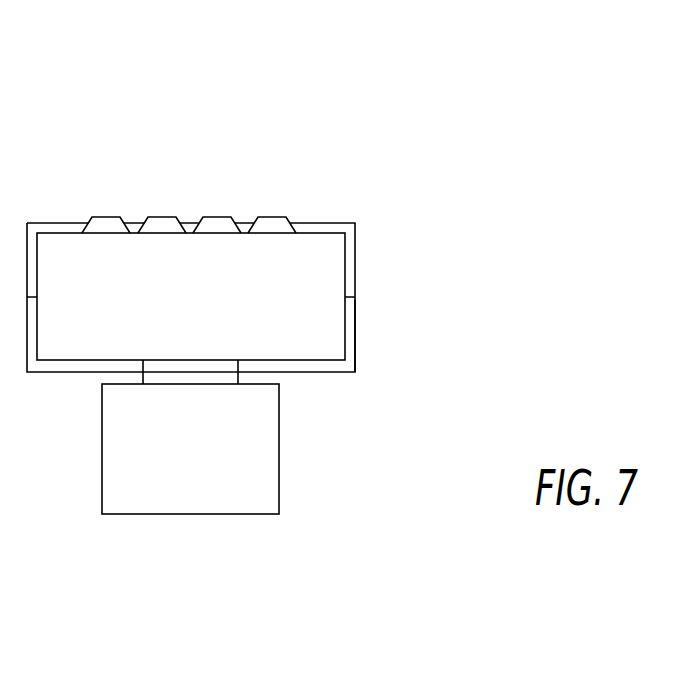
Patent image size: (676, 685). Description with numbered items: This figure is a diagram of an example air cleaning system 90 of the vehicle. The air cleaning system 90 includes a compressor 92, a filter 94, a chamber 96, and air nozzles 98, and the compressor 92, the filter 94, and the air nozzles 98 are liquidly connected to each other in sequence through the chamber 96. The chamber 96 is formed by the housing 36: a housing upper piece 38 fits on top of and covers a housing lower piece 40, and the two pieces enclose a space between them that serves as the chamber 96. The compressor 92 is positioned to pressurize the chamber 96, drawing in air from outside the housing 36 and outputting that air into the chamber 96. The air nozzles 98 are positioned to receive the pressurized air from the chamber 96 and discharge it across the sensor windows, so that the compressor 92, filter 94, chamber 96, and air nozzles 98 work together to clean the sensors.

The housing 36 is at (364, 267).
The housing upper piece 38 is at (322, 223).
The housing lower piece 40 is at (355, 332).
The air cleaning system 90 is at (186, 541).
The compressor 92 is at (279, 448).
The filter 94 is at (143, 377).
The chamber 96 is at (75, 262).
The air nozzles 98 is at (273, 217).